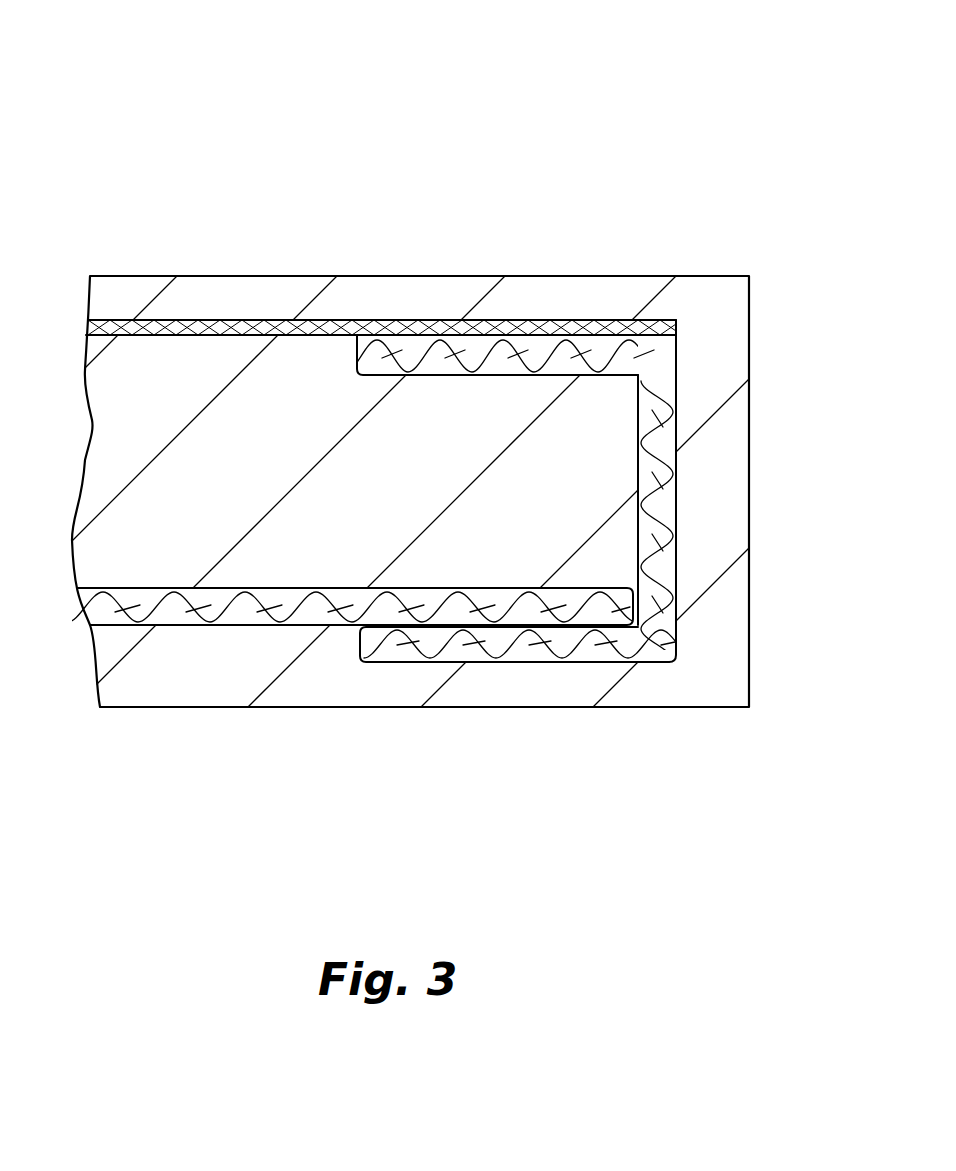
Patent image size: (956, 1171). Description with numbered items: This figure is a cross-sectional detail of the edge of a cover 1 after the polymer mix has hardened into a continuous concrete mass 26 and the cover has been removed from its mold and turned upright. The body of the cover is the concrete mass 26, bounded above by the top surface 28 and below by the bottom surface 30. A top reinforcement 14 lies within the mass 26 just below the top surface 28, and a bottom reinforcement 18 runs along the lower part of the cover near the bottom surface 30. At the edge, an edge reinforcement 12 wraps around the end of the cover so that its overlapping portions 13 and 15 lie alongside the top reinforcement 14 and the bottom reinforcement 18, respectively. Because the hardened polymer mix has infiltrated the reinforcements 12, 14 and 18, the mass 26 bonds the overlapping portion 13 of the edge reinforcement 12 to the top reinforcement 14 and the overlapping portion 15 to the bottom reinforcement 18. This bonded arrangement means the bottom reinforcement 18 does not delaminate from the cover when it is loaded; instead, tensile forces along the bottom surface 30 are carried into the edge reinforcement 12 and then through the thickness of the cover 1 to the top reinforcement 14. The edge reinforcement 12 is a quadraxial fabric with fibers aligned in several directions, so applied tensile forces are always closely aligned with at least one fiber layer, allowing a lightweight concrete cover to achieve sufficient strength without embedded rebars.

The cover 1 is at (116, 140).
The edge reinforcement 12 is at (665, 497).
The overlapping portion of the edge reinforcement 13 is at (538, 353).
The top reinforcement 14 is at (200, 325).
The overlapping portion of the edge reinforcement 15 is at (578, 645).
The bottom reinforcement 18 is at (322, 605).
The continuous concrete mass 26 is at (207, 495).
The top surface 28 is at (670, 277).
The bottom surface 30 is at (677, 707).